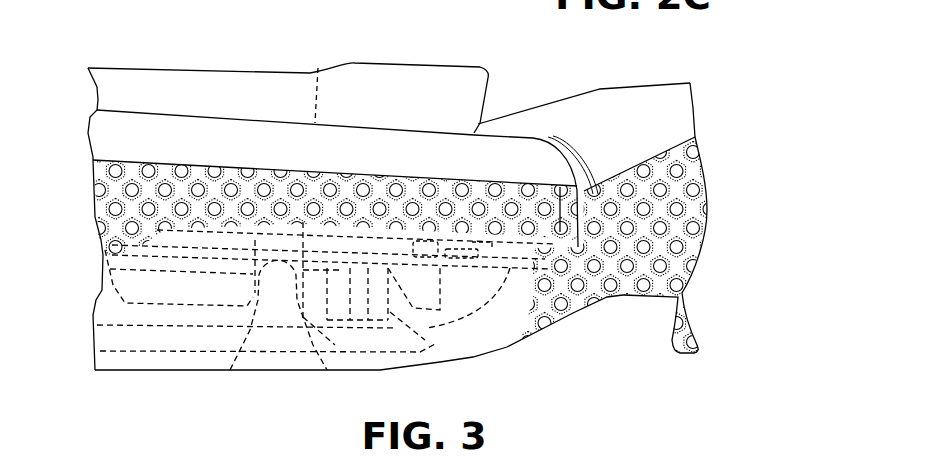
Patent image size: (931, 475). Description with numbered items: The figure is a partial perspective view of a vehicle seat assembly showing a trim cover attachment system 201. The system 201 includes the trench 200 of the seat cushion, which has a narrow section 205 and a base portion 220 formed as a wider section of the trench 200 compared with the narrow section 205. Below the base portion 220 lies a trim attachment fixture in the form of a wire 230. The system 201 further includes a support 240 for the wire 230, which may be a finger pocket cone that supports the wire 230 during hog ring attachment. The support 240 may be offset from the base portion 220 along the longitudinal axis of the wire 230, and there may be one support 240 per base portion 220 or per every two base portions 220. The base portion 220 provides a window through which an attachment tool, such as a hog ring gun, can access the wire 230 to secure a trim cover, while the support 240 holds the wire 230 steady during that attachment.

The trim cover attachment system 201 is at (128, 34).
The trench 200 is at (578, 240).
The narrow section 205 is at (455, 207).
The base portion 220 is at (308, 225).
The wire 230 is at (377, 235).
The support 240 is at (285, 312).